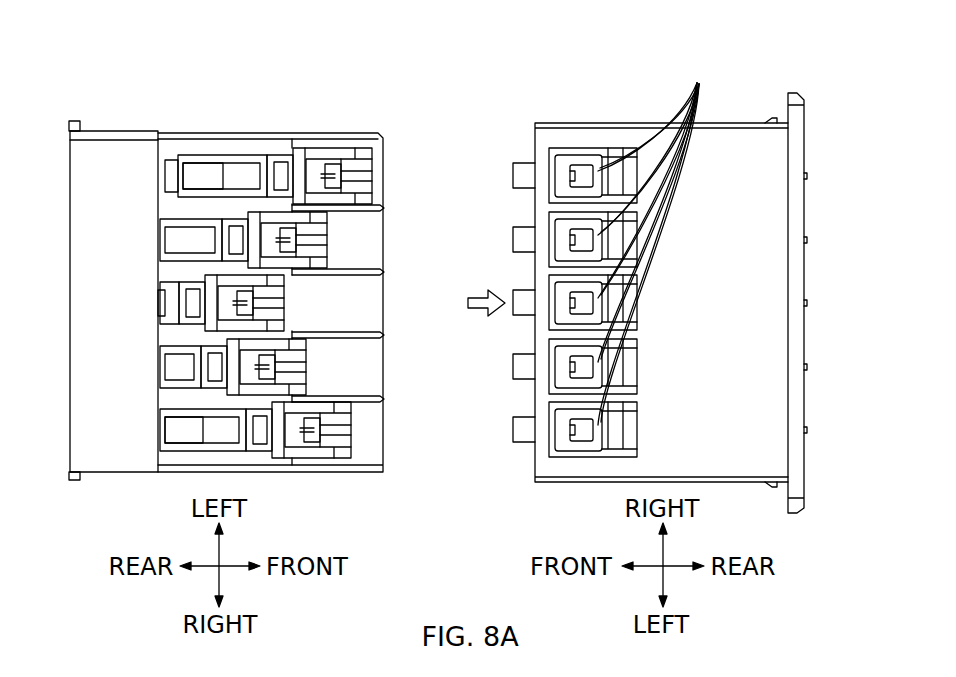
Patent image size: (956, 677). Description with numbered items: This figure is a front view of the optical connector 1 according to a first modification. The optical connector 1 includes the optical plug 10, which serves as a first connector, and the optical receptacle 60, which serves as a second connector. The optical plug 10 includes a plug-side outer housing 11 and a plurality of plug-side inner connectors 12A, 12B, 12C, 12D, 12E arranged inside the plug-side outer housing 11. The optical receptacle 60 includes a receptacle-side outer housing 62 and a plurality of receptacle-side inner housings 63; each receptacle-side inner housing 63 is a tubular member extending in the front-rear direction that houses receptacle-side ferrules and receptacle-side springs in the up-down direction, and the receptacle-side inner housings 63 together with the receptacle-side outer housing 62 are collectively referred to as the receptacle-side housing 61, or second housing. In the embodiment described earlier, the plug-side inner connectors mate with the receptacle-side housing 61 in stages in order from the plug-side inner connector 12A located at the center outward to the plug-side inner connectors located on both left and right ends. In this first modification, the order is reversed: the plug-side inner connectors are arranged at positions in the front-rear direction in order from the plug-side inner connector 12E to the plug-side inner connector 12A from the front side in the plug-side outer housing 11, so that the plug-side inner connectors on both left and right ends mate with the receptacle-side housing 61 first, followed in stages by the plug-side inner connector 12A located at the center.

The optical connector 1 is at (218, 38).
The optical plug 10 is at (233, 107).
The plug-side outer housing 11 is at (333, 135).
The plug-side inner connector 12A is at (392, 270).
The plug-side inner connector 12B is at (392, 333).
The plug-side inner connector 12C is at (392, 206).
The plug-side inner connector 12D is at (392, 397).
The plug-side inner connector 12E is at (392, 142).
The optical receptacle 60 is at (636, 107).
The receptacle-side housing 61 is at (676, 242).
The receptacle-side outer housing 62 is at (556, 123).
The receptacle-side inner housing 63 is at (676, 242).